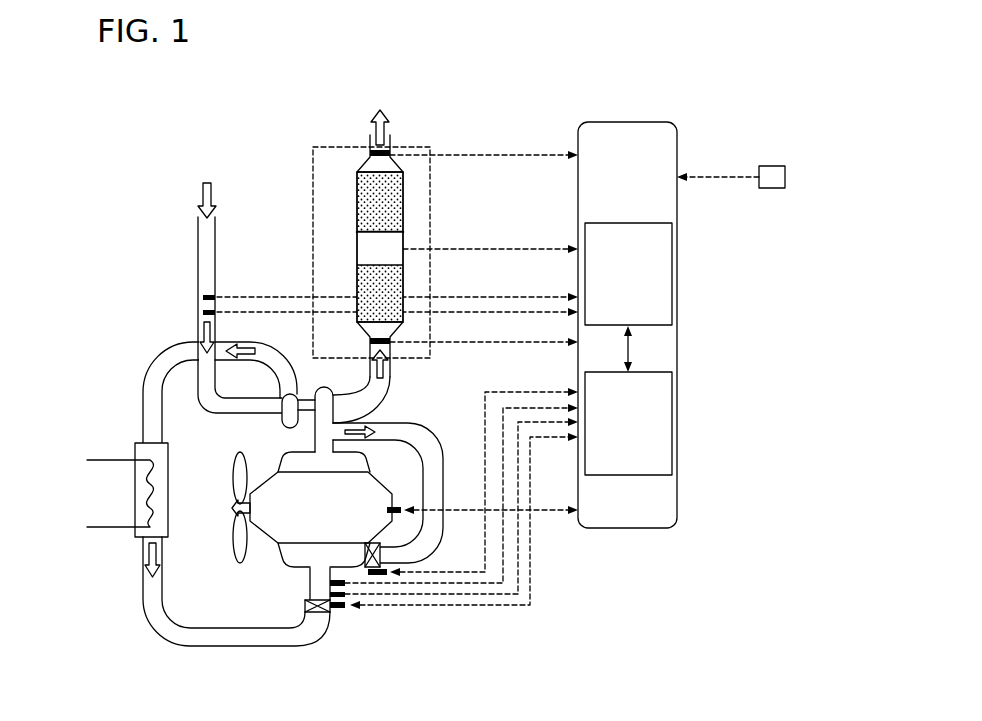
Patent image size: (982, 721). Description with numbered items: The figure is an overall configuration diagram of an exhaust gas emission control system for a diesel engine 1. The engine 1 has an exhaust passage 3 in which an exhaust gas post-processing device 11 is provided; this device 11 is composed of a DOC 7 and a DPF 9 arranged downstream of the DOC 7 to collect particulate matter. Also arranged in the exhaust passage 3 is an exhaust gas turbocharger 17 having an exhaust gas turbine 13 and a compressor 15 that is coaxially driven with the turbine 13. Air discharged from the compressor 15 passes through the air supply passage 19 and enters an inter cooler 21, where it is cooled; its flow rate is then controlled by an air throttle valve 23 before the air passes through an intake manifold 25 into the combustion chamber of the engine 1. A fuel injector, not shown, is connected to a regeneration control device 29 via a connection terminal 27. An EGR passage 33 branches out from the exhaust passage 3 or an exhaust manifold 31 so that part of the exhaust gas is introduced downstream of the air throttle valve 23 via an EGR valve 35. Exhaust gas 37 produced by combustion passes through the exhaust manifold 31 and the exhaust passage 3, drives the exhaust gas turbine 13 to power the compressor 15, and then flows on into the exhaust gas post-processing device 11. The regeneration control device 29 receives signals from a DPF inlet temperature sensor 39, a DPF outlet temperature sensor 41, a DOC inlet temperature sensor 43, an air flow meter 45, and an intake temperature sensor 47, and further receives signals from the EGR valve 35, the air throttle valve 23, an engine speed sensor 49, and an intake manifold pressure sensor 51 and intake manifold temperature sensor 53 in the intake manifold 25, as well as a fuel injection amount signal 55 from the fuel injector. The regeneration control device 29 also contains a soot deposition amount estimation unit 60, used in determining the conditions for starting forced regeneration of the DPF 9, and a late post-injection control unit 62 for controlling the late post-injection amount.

The diesel engine 1 is at (326, 499).
The exhaust passage 3 is at (378, 397).
The DOC 7 is at (404, 305).
The DPF 9 is at (405, 205).
The exhaust gas post-processing device 11 is at (413, 143).
The exhaust gas turbine 13 is at (333, 392).
The compressor 15 is at (282, 408).
The exhaust gas turbocharger 17 is at (300, 391).
The air supply passage 19 is at (145, 378).
The inter cooler 21 is at (135, 540).
The air throttle valve 23 is at (292, 645).
The intake manifold 25 is at (278, 556).
The connection terminal 27 is at (482, 493).
The regeneration control device 29 is at (729, 302).
The exhaust manifold 31 is at (272, 460).
The EGR passage 33 is at (440, 448).
The EGR valve 35 is at (382, 543).
The exhaust gas 37 is at (392, 365).
The DPF inlet temperature sensor 39 is at (403, 250).
The DPF outlet temperature sensor 41 is at (372, 150).
The DOC inlet temperature sensor 43 is at (392, 342).
The air flow meter 45 is at (203, 297).
The intake temperature sensor 47 is at (203, 312).
The engine speed sensor 49 is at (772, 190).
The intake manifold pressure sensor 51 is at (305, 604).
The intake manifold temperature sensor 53 is at (310, 578).
The fuel injection amount signal 55 is at (542, 510).
The soot deposition amount estimation unit 60 is at (677, 289).
The late post-injection control unit 62 is at (677, 409).